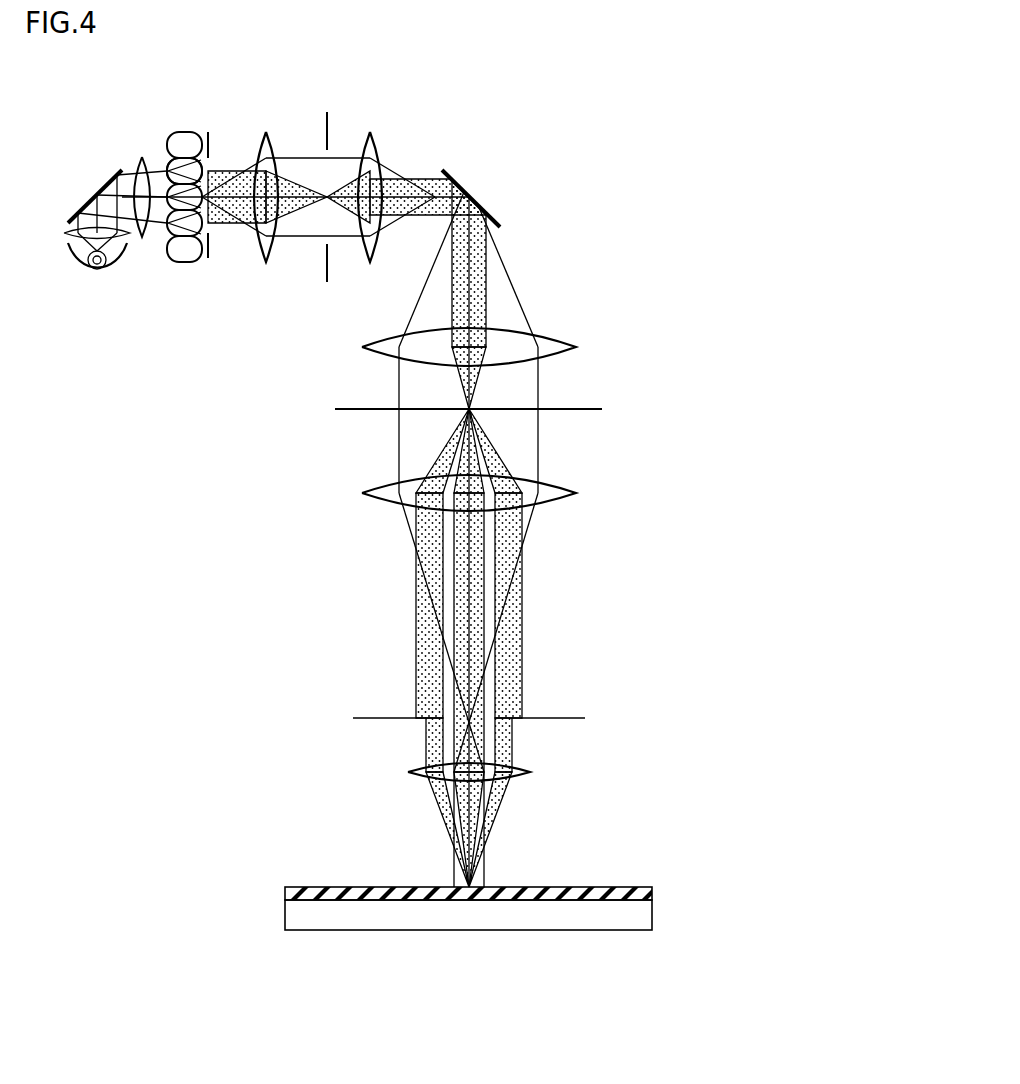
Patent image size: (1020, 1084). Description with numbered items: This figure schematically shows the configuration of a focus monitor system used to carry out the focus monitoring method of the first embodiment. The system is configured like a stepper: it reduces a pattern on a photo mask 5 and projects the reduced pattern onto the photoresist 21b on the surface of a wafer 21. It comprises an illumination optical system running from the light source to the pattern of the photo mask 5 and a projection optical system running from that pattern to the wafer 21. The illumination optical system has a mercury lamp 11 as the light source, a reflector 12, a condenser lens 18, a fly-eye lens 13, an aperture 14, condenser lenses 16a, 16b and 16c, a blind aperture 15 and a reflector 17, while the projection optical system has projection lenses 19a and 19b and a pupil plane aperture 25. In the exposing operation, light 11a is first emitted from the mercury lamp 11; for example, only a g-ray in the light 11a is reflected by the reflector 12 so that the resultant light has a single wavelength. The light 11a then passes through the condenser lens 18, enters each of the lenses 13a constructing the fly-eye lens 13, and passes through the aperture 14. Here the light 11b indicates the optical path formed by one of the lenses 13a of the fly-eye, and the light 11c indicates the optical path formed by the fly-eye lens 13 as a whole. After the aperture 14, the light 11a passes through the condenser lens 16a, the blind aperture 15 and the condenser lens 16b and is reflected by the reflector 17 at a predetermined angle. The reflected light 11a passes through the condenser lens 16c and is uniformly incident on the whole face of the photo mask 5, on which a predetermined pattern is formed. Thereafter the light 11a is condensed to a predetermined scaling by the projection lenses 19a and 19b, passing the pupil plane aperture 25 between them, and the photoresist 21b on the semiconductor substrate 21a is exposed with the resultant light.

The photo mask 5 is at (591, 407).
The mercury lamp 11 is at (121, 267).
The light 11a is at (308, 160).
The light 11b is at (288, 236).
The light 11c is at (300, 210).
The reflector 12 is at (100, 183).
The fly-eye lens 13 is at (185, 131).
The lens 13a is at (168, 162).
The aperture 14 is at (209, 258).
The blind aperture 15 is at (330, 140).
The condenser lens 16a is at (277, 143).
The condenser lens 16b is at (376, 142).
The condenser lens 16c is at (548, 333).
The reflector 17 is at (480, 199).
The condenser lens 18 is at (137, 160).
The projection lens 19a is at (558, 503).
The projection lens 19b is at (520, 777).
The wafer 21 is at (523, 904).
The semiconductor substrate 21a is at (652, 921).
The photoresist 21b is at (652, 893).
The pupil plane aperture 25 is at (563, 716).